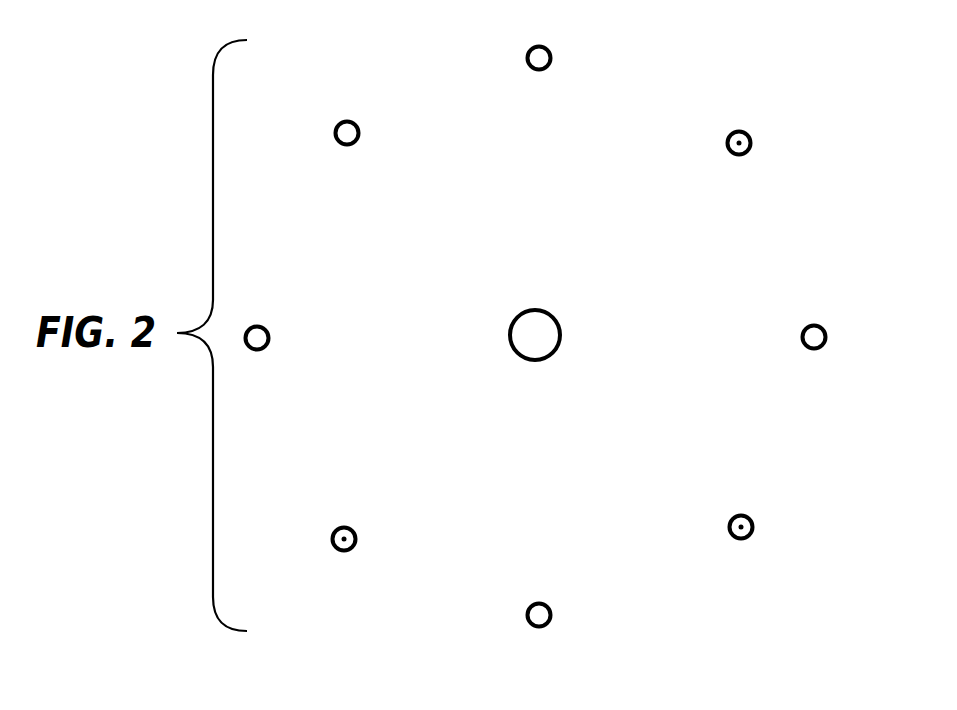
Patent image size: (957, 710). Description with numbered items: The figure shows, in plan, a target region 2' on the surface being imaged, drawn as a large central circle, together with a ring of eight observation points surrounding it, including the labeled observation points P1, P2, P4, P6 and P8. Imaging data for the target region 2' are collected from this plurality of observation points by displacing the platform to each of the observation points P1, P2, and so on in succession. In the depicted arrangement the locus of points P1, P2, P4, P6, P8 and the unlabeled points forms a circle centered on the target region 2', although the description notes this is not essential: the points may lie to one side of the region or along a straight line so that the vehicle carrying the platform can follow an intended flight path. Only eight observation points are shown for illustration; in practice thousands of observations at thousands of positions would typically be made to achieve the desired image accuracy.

The target region 2' is at (551, 316).
The observation point P1 is at (271, 331).
The observation point P2 is at (337, 121).
The observation point P4 is at (743, 131).
The observation point P6 is at (745, 514).
The observation point P8 is at (335, 527).